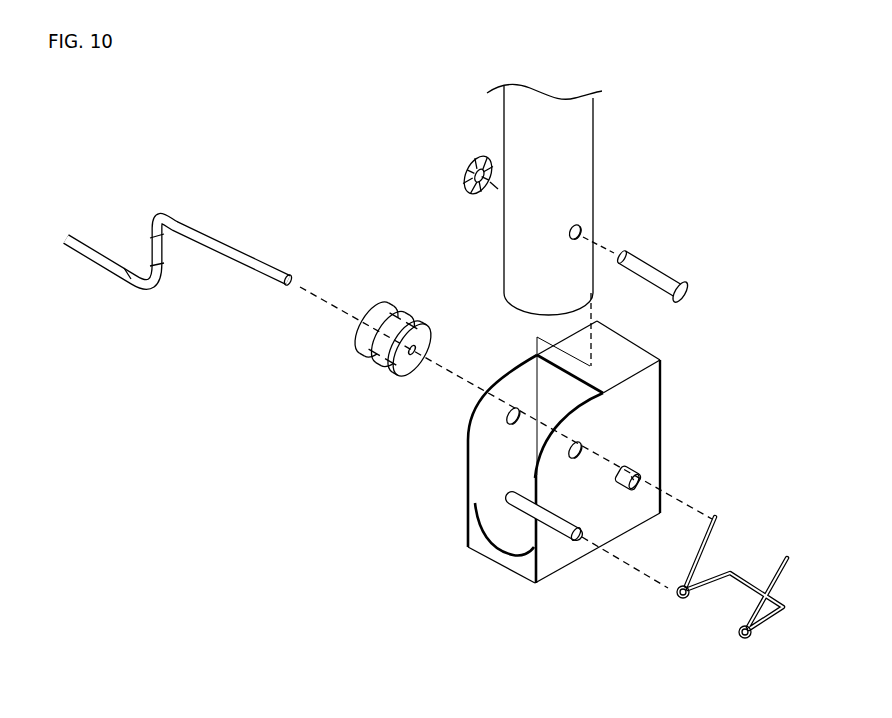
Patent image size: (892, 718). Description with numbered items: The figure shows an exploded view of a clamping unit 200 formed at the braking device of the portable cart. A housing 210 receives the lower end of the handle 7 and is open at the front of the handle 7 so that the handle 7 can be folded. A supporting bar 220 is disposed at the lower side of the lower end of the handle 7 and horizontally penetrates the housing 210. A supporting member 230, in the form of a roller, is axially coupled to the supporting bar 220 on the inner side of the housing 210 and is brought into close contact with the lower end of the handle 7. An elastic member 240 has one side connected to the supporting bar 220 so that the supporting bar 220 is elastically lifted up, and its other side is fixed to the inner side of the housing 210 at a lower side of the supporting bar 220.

The handle 7 is at (578, 139).
The clamping unit 200 is at (370, 542).
The housing 210 is at (647, 418).
The supporting bar 220 is at (227, 242).
The supporting member 230 is at (357, 342).
The elastic member 240 is at (670, 600).